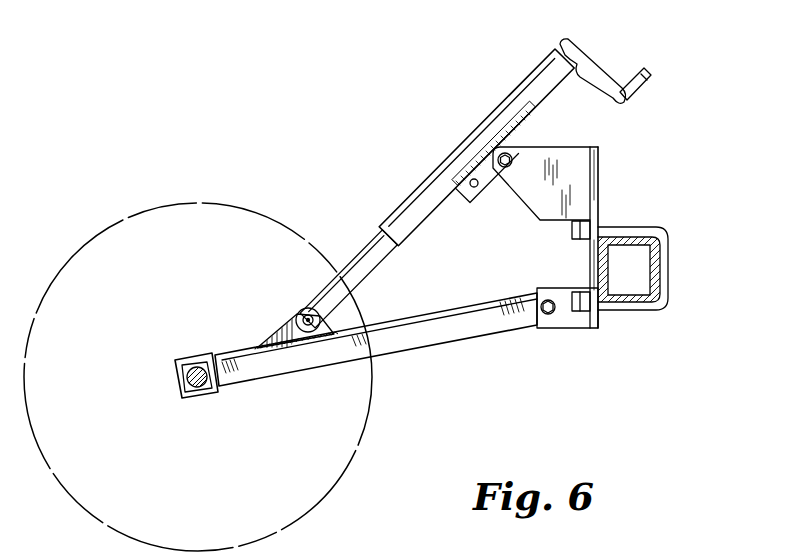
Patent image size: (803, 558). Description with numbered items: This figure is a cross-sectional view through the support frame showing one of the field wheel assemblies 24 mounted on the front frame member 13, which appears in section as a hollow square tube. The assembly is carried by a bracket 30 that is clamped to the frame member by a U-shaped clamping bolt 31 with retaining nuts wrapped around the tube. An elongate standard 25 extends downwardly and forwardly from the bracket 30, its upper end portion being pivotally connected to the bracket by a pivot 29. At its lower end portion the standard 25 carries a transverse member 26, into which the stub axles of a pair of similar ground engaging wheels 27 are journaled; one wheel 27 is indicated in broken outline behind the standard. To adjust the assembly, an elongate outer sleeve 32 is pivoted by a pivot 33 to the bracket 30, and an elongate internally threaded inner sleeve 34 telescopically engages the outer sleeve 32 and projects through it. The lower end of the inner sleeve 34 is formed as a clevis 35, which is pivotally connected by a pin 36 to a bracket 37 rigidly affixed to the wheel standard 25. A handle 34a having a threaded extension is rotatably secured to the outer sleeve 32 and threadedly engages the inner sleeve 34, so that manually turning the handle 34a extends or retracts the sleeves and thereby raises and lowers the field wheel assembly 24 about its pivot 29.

The front frame member 13 is at (661, 258).
The field wheel assembly 24 is at (480, 177).
The elongate standard 25 is at (474, 328).
The transverse member 26 is at (174, 373).
The ground engaging wheel 27 is at (357, 443).
The pivot 29 is at (549, 316).
The bracket 30 is at (530, 190).
The U-bolt 31 is at (637, 227).
The outer sleeve 32 is at (534, 66).
The pivot 33 is at (511, 157).
The internally threaded sleeve 34 is at (367, 248).
The handle 34a is at (655, 46).
The clevis 35 is at (311, 302).
The pivot pin 36 is at (305, 313).
The bracket 37 is at (280, 327).